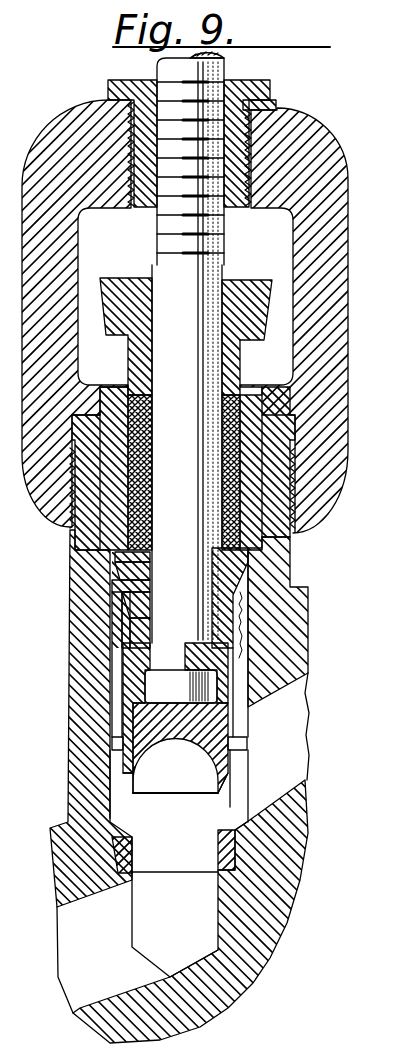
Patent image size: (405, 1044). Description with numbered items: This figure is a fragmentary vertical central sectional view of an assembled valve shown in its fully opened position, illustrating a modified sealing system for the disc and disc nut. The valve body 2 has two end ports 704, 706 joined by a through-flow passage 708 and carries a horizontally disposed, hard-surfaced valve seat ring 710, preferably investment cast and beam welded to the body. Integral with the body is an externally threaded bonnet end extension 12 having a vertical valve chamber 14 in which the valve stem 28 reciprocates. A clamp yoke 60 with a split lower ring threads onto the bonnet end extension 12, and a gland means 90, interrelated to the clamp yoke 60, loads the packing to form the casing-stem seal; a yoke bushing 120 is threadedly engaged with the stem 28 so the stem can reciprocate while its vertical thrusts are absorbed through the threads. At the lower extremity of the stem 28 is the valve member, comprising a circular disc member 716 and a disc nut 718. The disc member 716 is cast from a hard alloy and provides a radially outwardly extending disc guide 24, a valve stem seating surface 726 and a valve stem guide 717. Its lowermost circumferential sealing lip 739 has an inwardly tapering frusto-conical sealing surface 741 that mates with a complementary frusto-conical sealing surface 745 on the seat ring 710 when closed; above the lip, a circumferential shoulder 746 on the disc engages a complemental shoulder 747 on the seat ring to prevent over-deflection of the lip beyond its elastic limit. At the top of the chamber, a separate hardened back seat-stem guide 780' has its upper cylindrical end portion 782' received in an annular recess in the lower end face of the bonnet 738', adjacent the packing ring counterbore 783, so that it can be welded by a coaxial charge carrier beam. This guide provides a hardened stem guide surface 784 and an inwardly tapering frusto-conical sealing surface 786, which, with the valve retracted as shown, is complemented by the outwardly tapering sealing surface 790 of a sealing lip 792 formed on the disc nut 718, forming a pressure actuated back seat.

The clamp yoke 60 is at (22, 145).
The yoke bushing 120 is at (250, 122).
The gland means 90 is at (120, 274).
The packing ring counterbore 783 is at (130, 434).
The valve stem 28 is at (188, 535).
The bonnet 738' is at (294, 468).
The upper cylindrical end portion 782' is at (91, 553).
The back seat-stem guide 780' is at (91, 571).
The frusto-conical sealing surface 786 is at (117, 590).
The sealing lip 792 is at (127, 608).
The frusto-conical sealing surface 790 is at (133, 600).
The disc nut 718 is at (140, 632).
The stem guide surface 784 is at (150, 560).
The bonnet end extension 12 is at (78, 636).
The valve chamber 14 is at (115, 656).
The end port 706 is at (300, 737).
The valve stem guide 717 is at (133, 688).
The valve stem seating surface 726 is at (175, 700).
The disc member 716 is at (175, 728).
The sealing lip 739 is at (175, 785).
The sealing surface 741 is at (131, 786).
The circumferential shoulder 746 is at (231, 788).
The disc guide 24 is at (112, 742).
The valve body 2 is at (232, 988).
The frusto-conical sealing surface 745 is at (215, 852).
The circumferential shoulder 747 is at (226, 828).
The valve seat ring 710 is at (218, 868).
The through-flow passage 708 is at (188, 924).
The end port 704 is at (60, 966).